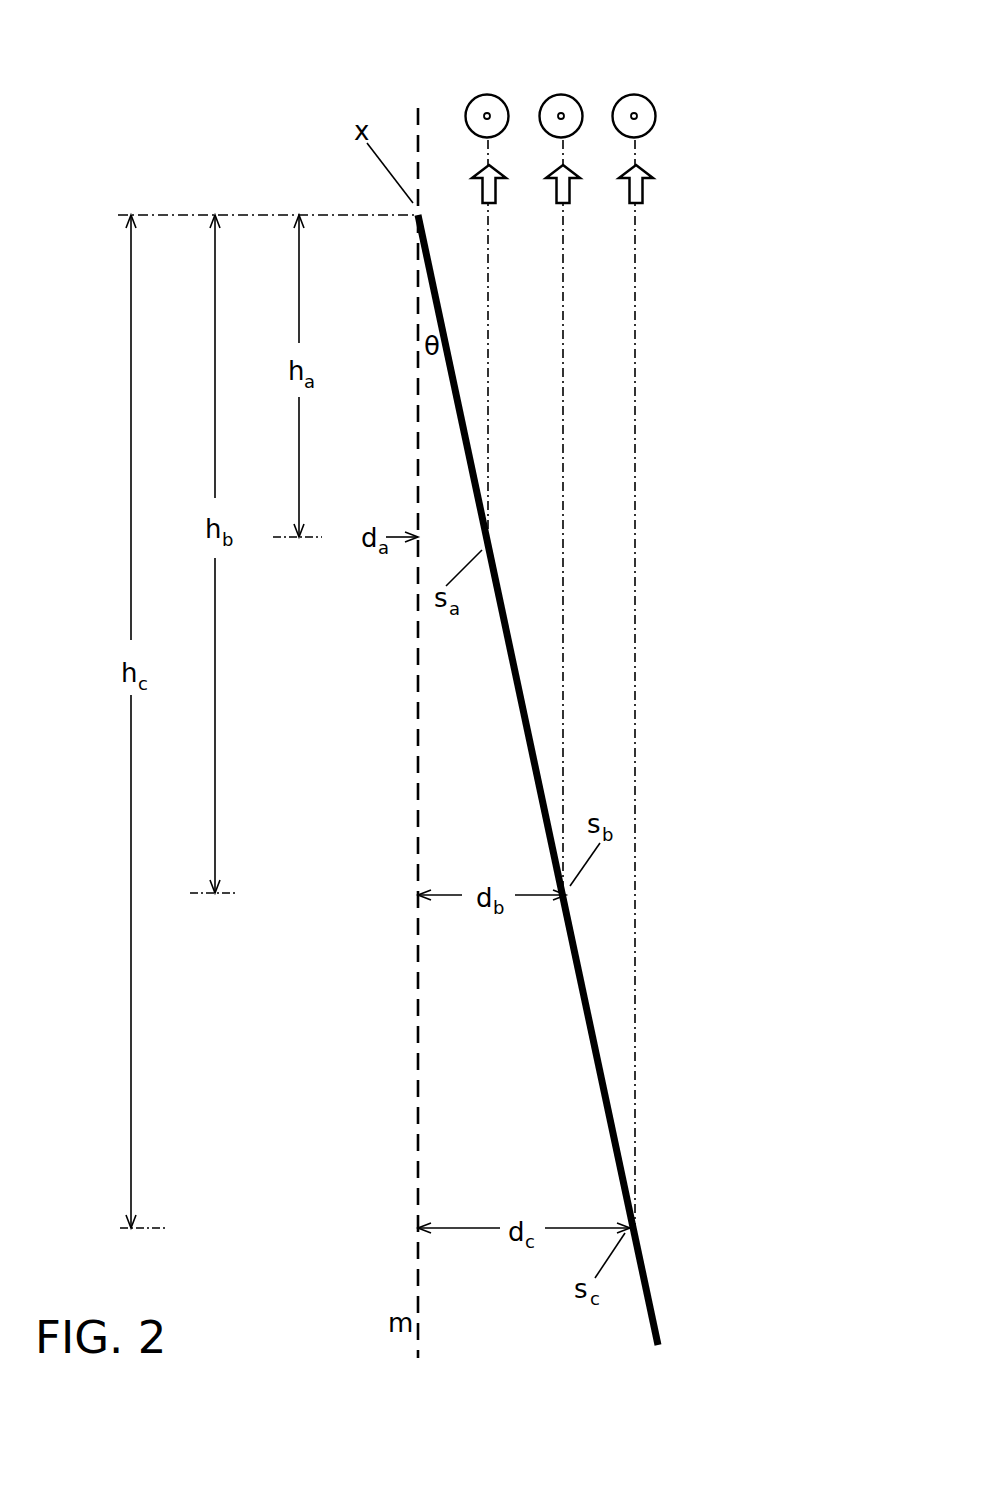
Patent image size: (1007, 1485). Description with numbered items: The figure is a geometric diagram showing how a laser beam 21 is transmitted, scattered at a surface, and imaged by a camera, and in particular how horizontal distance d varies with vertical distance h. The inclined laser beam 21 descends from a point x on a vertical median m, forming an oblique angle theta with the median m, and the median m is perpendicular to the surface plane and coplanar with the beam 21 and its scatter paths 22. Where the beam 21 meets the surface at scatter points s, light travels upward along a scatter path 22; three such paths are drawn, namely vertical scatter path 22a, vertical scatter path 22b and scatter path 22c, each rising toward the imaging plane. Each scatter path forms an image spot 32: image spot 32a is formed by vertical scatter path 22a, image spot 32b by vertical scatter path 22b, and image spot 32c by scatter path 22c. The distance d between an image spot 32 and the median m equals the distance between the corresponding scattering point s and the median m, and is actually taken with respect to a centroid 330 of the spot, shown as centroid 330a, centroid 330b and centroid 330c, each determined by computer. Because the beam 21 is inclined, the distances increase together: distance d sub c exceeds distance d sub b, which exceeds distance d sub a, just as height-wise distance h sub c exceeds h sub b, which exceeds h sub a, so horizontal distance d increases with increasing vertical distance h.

The laser beam 21 is at (573, 1002).
The scatter path 22 is at (523, 340).
The vertical scatter path 22a is at (497, 262).
The vertical scatter path 22b is at (570, 442).
The scatter path 22c is at (643, 608).
The image spot 32 is at (475, 94).
The image spot 32a is at (483, 100).
The image spot 32b is at (573, 110).
The image spot 32c is at (647, 110).
The centroid 330 is at (387, 93).
The centroid 330a is at (484, 115).
The centroid 330b is at (560, 108).
The centroid 330c is at (633, 108).